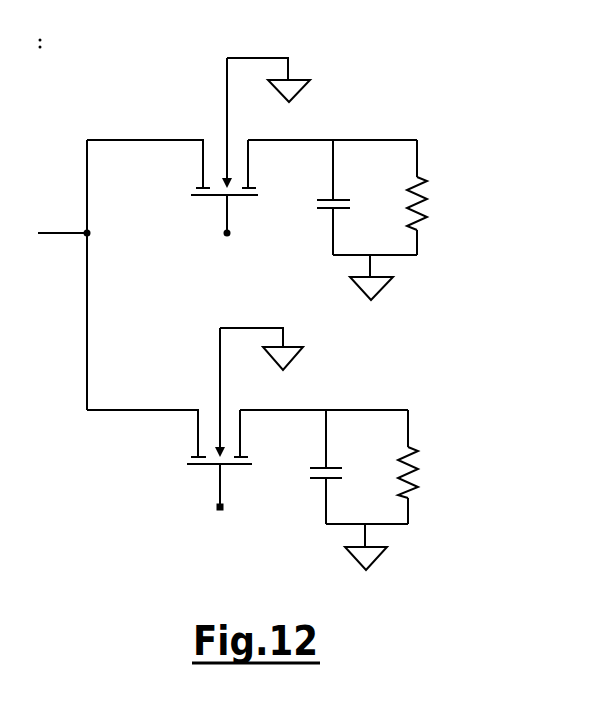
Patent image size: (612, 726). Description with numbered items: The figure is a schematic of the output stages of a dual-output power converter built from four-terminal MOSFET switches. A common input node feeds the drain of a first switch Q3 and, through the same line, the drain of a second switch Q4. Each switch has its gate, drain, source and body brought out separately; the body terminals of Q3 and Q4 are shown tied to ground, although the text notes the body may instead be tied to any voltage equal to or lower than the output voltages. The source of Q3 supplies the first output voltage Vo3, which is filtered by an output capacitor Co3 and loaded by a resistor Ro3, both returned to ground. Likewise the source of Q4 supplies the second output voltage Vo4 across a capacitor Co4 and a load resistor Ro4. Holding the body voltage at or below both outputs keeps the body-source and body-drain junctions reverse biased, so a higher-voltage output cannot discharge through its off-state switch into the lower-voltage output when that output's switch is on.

The four-terminal MOSFET switch Q3 is at (198, 147).
The four-terminal MOSFET switch Q4 is at (195, 419).
The output voltage Vo3 is at (338, 128).
The output voltage Vo4 is at (331, 397).
The output capacitor Co3 is at (345, 197).
The output capacitor Co4 is at (338, 467).
The output load resistor Ro3 is at (441, 197).
The output load resistor Ro4 is at (428, 467).